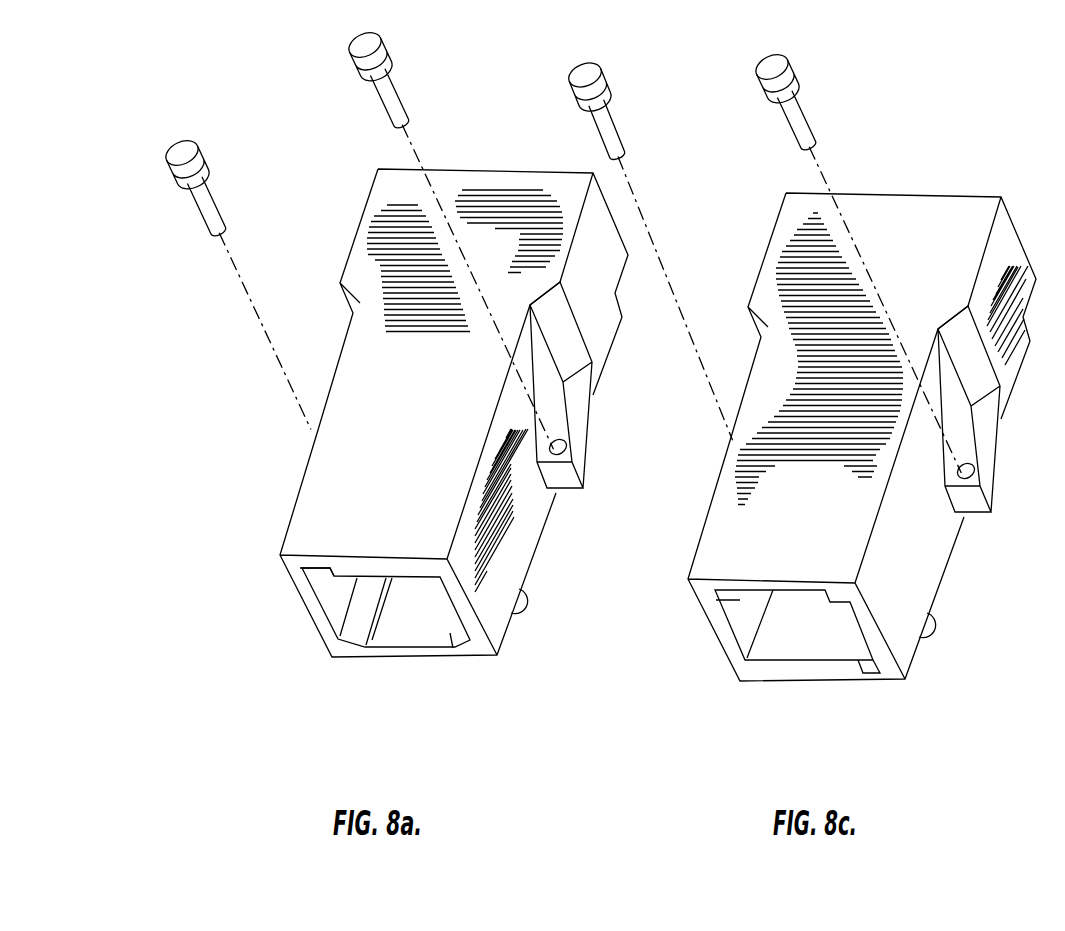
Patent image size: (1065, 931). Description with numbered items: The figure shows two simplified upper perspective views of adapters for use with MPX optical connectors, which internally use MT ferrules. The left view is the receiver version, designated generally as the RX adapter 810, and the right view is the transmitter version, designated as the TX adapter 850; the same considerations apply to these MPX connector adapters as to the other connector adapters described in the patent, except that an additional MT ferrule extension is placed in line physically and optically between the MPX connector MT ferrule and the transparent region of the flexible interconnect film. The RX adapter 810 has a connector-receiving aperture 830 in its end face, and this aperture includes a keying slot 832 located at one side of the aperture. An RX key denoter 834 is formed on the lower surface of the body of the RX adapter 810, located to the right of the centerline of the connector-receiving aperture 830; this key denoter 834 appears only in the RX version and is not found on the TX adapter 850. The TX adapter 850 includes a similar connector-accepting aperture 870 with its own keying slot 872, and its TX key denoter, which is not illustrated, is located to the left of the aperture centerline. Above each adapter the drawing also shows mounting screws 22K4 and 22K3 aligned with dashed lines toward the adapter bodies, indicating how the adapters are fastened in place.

In FIG. 8A, the RX adapter 810 is at (303, 286).
In FIG. 8A, the connector-receiving aperture 830 is at (400, 627).
In FIG. 8A, the keying slot 832 is at (298, 580).
In FIG. 8A, the RX key denoter 834 is at (528, 603).
In FIG. 8C, the TX adapter 850 is at (1002, 623).
In FIG. 8C, the connector-accepting aperture 870 is at (783, 646).
In FIG. 8C, the keying slot 872 is at (867, 678).
In FIG. 8C, the screw 22K4 is at (622, 137).
In FIG. 8C, the screw 22K3 is at (810, 120).